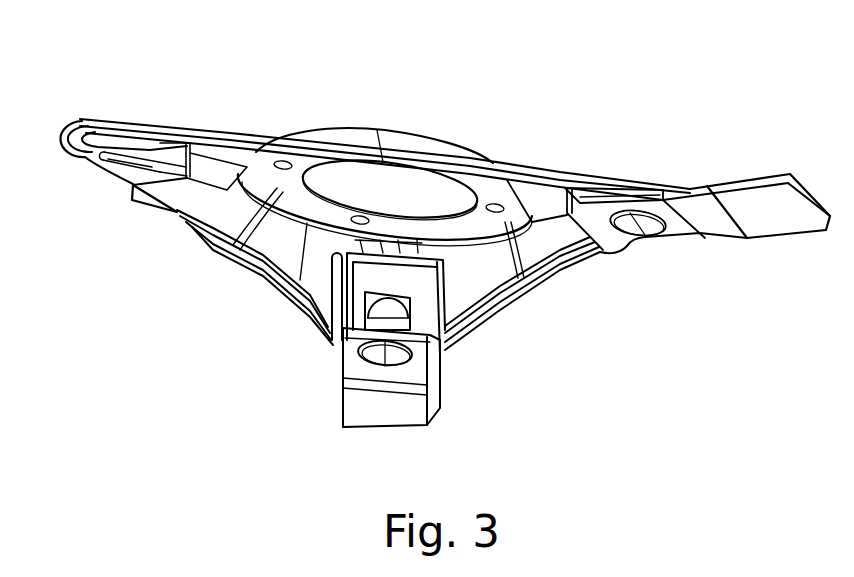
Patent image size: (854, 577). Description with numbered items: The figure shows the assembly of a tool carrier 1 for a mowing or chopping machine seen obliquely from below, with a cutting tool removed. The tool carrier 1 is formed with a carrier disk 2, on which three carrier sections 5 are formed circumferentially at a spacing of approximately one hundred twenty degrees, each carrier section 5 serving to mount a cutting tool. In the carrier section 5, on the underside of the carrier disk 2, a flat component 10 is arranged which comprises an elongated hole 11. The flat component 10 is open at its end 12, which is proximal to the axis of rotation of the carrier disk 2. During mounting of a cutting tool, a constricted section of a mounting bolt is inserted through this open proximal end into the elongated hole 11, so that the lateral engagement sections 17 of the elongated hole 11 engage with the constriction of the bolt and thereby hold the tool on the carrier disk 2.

The tool carrier 1 is at (340, 146).
The carrier disk 2 is at (500, 263).
The carrier section 5 is at (163, 147).
The flat component 10 is at (73, 157).
The elongated hole 11 is at (127, 165).
The end 12 is at (168, 180).
The lateral engagement sections 17 is at (122, 131).